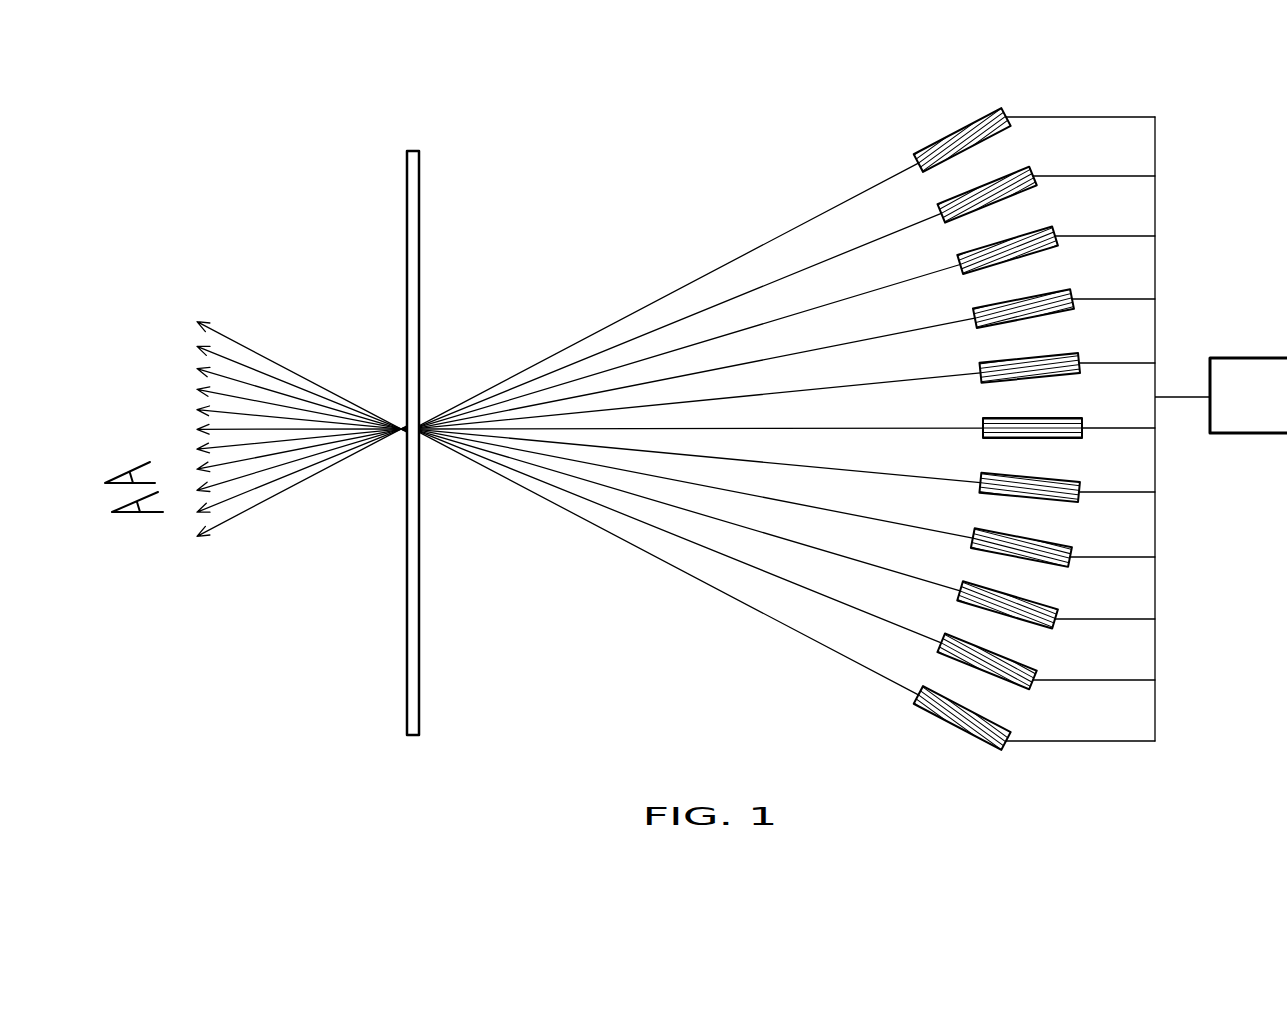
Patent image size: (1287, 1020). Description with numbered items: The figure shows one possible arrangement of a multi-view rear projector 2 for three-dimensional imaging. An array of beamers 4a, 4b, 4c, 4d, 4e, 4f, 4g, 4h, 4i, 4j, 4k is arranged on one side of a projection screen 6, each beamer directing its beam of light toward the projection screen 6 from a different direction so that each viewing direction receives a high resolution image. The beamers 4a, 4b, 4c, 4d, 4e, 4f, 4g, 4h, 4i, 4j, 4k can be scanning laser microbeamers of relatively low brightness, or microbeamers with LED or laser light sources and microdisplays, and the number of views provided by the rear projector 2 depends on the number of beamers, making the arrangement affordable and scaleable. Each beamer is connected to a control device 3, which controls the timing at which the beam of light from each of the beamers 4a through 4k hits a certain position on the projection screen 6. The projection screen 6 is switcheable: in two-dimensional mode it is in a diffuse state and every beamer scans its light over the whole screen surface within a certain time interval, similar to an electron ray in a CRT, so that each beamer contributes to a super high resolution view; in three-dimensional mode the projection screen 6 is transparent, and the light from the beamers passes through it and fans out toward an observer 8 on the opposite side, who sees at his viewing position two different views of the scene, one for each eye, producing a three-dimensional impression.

The rear projector 2 is at (742, 422).
The control device 3 is at (1267, 358).
The beamer 4a is at (1001, 108).
The beamer 4b is at (1029, 167).
The beamer 4c is at (1052, 226).
The beamer 4d is at (1070, 289).
The beamer 4e is at (1078, 353).
The beamer 4f is at (1082, 418).
The beamer 4g is at (1078, 502).
The beamer 4h is at (1068, 567).
The beamer 4i is at (1052, 629).
The beamer 4j is at (1029, 689).
The beamer 4k is at (1001, 750).
The projection screen 6 is at (412, 151).
The observer 8 is at (120, 452).